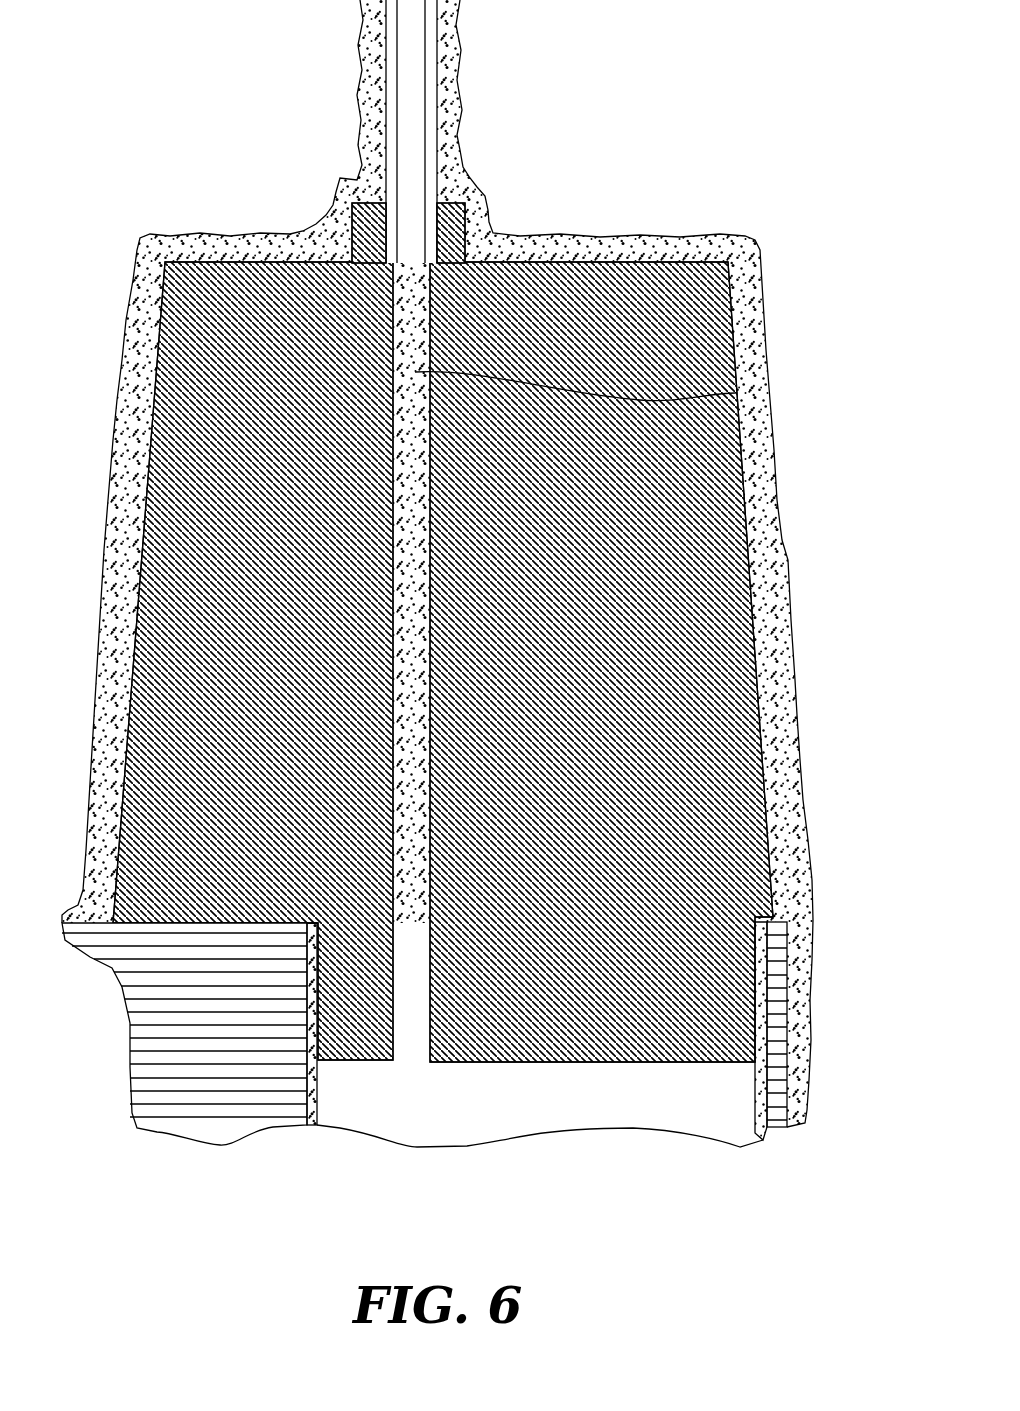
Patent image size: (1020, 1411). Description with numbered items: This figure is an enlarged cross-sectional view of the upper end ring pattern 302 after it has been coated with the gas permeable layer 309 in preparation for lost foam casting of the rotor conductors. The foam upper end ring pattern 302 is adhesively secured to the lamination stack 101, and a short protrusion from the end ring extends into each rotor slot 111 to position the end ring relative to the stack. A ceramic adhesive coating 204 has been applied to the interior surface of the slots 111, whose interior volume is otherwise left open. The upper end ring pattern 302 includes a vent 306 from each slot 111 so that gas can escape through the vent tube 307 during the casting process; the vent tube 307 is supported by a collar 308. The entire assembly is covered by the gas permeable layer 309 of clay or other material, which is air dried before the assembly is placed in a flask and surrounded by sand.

The lamination stack 101 is at (122, 990).
The slots 111 is at (507, 1135).
The ceramic adhesive coating 204 is at (317, 1082).
The upper end ring pattern 302 is at (762, 713).
The vent 306 is at (735, 393).
The vent tube 307 is at (438, 108).
The collar 308 is at (478, 235).
The gas permeable layer 309 is at (108, 474).